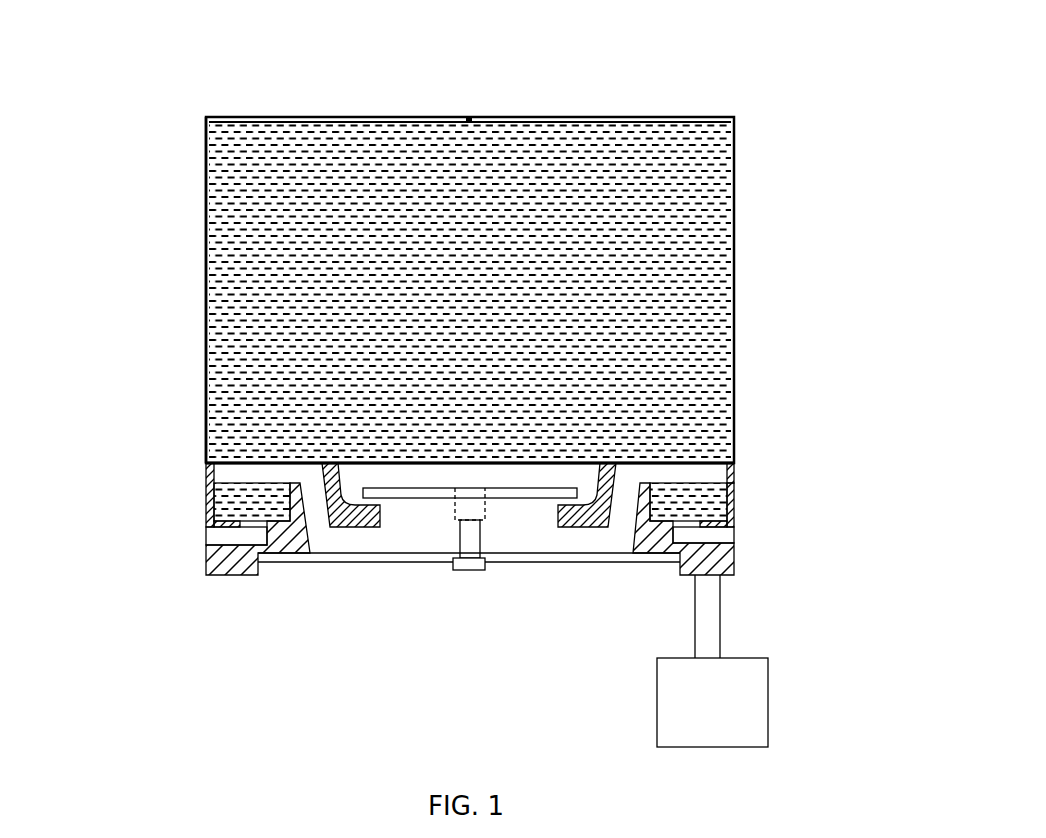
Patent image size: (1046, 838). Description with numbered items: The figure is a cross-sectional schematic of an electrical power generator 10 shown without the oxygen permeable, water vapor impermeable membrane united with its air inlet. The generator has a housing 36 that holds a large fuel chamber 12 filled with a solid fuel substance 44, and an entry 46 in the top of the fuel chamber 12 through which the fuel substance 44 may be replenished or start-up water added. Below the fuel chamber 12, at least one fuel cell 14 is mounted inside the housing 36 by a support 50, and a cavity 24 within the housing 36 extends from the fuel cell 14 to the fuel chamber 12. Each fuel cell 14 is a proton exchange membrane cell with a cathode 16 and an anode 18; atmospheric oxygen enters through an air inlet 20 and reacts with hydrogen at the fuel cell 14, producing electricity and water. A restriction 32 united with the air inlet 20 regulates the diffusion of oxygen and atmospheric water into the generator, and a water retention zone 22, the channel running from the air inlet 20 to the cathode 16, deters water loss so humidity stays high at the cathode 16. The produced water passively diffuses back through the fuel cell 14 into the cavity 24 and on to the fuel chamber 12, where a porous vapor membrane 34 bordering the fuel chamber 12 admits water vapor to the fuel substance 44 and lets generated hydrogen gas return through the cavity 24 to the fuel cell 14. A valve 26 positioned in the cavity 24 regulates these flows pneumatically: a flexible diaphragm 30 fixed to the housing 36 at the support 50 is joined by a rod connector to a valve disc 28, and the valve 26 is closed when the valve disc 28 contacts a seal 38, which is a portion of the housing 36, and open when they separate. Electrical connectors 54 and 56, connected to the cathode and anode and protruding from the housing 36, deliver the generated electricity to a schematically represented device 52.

The electrical power generator 10 is at (614, 81).
The fuel chamber 12 is at (720, 190).
The fuel cell 14 is at (207, 482).
The cathode 16 is at (743, 529).
The anode 18 is at (699, 477).
The air inlet 20 is at (745, 529).
The water retention zone 22 is at (253, 533).
The cavity 24 is at (513, 471).
The valve 26 is at (446, 524).
The valve disc 28 is at (440, 493).
The flexible diaphragm 30 is at (325, 558).
The restriction 32 is at (207, 527).
The porous vapor membrane 34 is at (540, 463).
The housing 36 is at (205, 300).
The seal 38 is at (580, 528).
The fuel substance 44 is at (673, 302).
The entry 46 is at (467, 109).
The support 50 is at (230, 565).
The device 52 is at (737, 690).
The electrical connector 54 is at (697, 608).
The electrical connector 56 is at (720, 608).